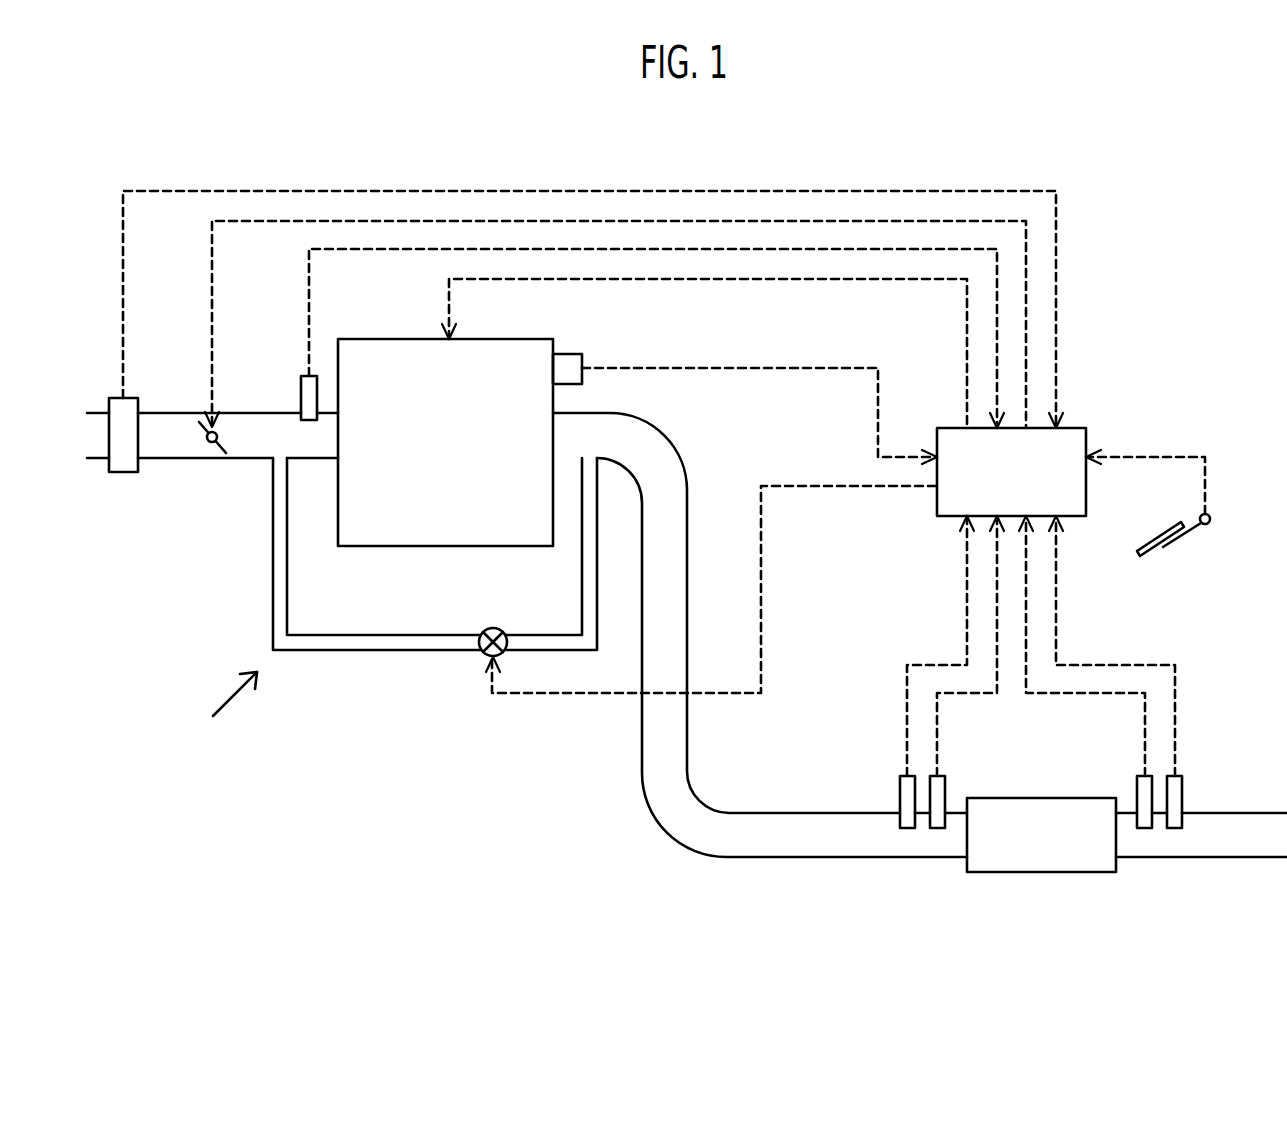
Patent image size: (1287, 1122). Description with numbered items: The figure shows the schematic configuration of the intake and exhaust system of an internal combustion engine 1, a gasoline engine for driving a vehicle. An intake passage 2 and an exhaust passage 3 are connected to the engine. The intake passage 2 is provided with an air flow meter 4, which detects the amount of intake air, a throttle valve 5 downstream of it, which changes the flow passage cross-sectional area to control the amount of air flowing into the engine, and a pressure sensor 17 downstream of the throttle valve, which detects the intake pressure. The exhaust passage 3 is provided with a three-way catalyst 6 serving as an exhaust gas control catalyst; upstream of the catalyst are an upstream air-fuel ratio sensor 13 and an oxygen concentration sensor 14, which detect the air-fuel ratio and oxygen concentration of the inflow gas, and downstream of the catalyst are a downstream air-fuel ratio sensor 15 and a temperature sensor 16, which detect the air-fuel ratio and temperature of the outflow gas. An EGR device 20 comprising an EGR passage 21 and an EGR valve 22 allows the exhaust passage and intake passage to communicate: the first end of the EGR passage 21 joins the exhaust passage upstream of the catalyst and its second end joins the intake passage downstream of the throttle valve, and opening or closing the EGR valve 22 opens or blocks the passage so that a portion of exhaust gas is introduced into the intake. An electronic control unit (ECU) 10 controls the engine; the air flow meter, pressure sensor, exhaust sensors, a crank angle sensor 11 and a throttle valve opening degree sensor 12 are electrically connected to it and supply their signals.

The internal combustion engine 1 is at (434, 547).
The intake passage 2 is at (185, 412).
The exhaust passage 3 is at (687, 607).
The air flow meter 4 is at (122, 474).
The throttle valve 5 is at (208, 444).
The three-way catalyst 6 is at (1022, 798).
The electronic control unit (ECU) 10 is at (1080, 428).
The crank angle sensor 11 is at (575, 354).
The throttle valve opening degree sensor 12 is at (1205, 526).
The upstream air-fuel ratio sensor 13 is at (900, 790).
The oxygen concentration sensor 14 is at (945, 790).
The downstream air-fuel ratio sensor 15 is at (1137, 790).
The temperature sensor 16 is at (1182, 790).
The pressure sensor 17 is at (301, 389).
The EGR device 20 is at (208, 749).
The EGR passage 21 is at (272, 576).
The EGR valve 22 is at (493, 628).